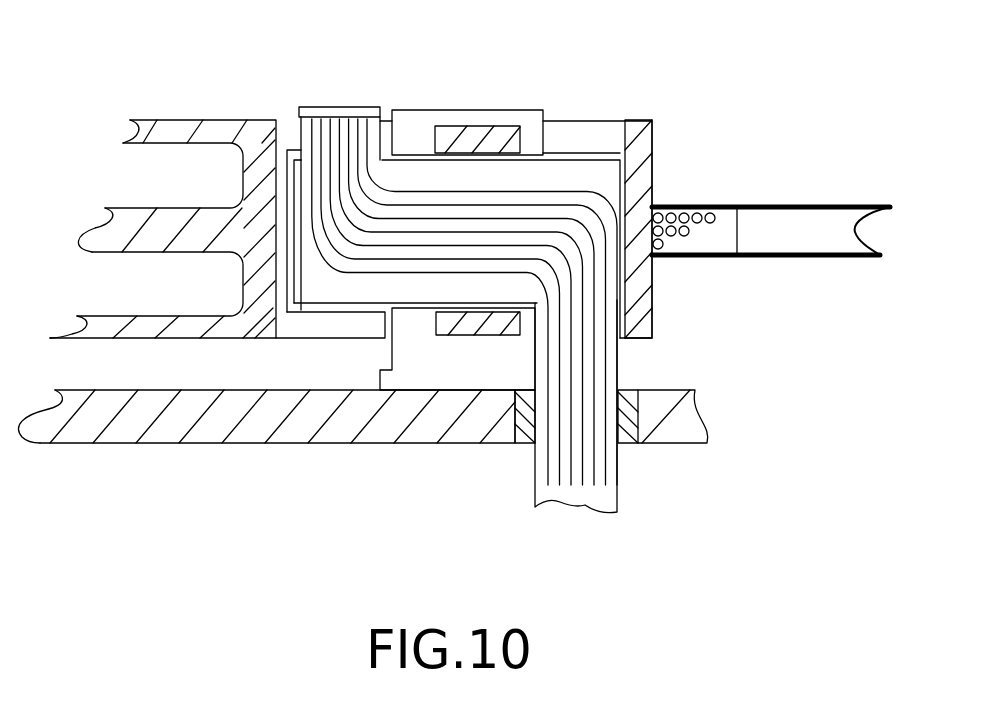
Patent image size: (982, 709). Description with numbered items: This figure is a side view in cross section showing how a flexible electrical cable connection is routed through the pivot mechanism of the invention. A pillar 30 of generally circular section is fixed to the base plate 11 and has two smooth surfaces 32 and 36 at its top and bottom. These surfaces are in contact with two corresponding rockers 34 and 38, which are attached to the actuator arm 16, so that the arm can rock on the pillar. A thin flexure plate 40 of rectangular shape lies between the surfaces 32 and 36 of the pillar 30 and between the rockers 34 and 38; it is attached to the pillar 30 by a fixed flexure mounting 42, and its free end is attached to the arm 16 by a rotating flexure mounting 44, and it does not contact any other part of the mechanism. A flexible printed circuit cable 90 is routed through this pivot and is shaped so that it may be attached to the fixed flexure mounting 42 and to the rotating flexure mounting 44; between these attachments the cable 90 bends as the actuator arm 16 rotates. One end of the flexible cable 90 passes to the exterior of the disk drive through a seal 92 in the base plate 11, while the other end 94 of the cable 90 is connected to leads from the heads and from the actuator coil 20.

The base plate 11 is at (168, 428).
The actuator arm 16 is at (297, 117).
The actuator coil 20 is at (677, 207).
The pillar 30 is at (459, 93).
The surface 32 is at (420, 137).
The rocker 34 is at (508, 138).
The surface 36 is at (457, 415).
The rocker 38 is at (493, 322).
The flexure plate 40 is at (358, 288).
The fixed flexure mounting 42 is at (572, 152).
The rotating flexure mounting 44 is at (307, 310).
The flexible printed circuit cable 90 is at (578, 366).
The seal 92 is at (627, 427).
The end of cable 94 is at (328, 110).